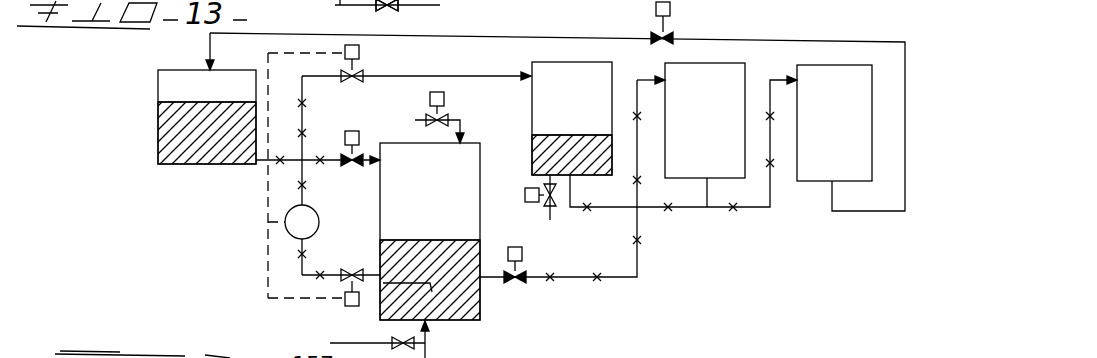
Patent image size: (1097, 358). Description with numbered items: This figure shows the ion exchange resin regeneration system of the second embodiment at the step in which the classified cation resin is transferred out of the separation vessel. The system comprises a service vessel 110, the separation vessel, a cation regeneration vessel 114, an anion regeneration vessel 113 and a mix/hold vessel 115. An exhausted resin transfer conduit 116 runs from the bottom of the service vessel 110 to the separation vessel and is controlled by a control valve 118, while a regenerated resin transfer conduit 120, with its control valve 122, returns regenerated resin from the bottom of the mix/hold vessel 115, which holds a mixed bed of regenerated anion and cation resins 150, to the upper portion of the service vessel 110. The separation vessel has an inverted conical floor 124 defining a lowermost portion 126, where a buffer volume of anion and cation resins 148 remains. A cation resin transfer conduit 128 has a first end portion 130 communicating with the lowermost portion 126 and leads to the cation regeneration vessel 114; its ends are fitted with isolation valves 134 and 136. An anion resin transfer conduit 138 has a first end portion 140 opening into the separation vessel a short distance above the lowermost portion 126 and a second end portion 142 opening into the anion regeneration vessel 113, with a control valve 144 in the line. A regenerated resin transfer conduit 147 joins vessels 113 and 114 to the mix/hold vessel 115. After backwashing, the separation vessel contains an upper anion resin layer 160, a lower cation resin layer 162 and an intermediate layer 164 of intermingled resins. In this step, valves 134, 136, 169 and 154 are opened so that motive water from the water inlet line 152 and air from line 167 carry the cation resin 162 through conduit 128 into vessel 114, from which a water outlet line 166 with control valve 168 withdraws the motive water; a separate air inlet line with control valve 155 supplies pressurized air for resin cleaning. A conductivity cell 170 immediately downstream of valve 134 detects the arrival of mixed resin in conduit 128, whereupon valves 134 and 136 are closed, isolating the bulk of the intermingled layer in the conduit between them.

The service vessel 110 is at (158, 90).
The mixed bed of regenerated anion and cation resins 150 is at (190, 165).
The exhausted resin transfer conduit 116 is at (270, 175).
The cation resin transfer conduit 128 is at (308, 174).
The control valve 118 is at (354, 150).
The conductivity cell 170 is at (312, 216).
The control valve 122 is at (500, 76).
The control or isolation valve 136 is at (360, 70).
The cation regeneration vessel 114 is at (530, 100).
The air line 167 is at (462, 128).
The control valve 169 is at (438, 112).
The upper anion resin layer 160 is at (426, 240).
The first end portion 130 is at (432, 282).
The lowermost portion 126 is at (400, 300).
The buffer volume of anion and cation resins 148 is at (462, 300).
The inverted conical floor 124 is at (470, 303).
The layer of intermingled anion and cation resins 164 is at (450, 298).
The control or isolation valve 134 is at (345, 286).
The water inlet line 152 is at (350, 343).
The control valve 154 is at (398, 338).
The control valve 155 is at (395, 12).
The lower cation resin layer 162 is at (560, 138).
The control valve 168 is at (543, 200).
The water outlet line 166 is at (548, 182).
The regenerated resin transfer conduit 147 is at (758, 210).
The second end portion 142 is at (637, 80).
The anion resin transfer conduit 138 is at (640, 232).
The first end portion 140 is at (500, 285).
The control valve 144 is at (523, 260).
The anion regeneration vessel 113 is at (745, 78).
The mix/hold vessel 115 is at (872, 92).
The regenerated resin transfer conduit 120 is at (735, 40).